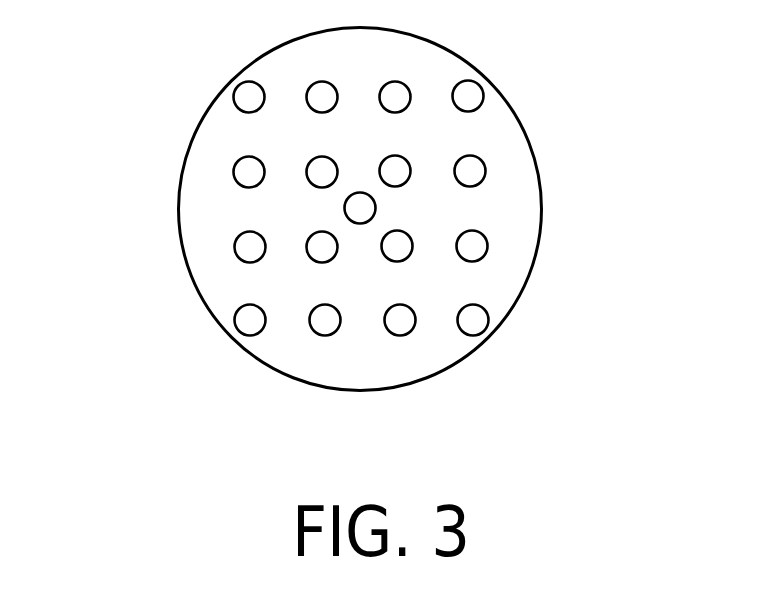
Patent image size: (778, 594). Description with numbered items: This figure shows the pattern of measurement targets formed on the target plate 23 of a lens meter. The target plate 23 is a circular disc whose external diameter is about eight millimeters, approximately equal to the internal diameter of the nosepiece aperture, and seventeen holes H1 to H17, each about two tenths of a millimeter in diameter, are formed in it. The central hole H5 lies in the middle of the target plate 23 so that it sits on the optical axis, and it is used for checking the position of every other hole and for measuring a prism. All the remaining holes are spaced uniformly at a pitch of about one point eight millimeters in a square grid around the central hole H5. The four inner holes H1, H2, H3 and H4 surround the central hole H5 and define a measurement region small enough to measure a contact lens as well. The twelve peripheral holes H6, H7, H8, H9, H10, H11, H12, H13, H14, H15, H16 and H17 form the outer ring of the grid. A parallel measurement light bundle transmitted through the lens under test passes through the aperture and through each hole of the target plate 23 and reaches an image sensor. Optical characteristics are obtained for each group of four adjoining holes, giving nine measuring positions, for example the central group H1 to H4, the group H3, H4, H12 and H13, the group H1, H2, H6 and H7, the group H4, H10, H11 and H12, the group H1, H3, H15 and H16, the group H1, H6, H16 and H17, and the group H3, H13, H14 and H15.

The target plate 23 is at (178, 174).
The hole H1 is at (322, 172).
The hole H2 is at (395, 171).
The hole H3 is at (322, 247).
The hole H4 is at (397, 246).
The central hole H5 is at (360, 208).
The hole H6 is at (322, 97).
The hole H7 is at (395, 97).
The hole H8 is at (468, 96).
The hole H9 is at (470, 171).
The hole H10 is at (472, 246).
The hole H11 is at (473, 320).
The hole H12 is at (400, 320).
The hole H13 is at (325, 320).
The hole H14 is at (250, 320).
The hole H15 is at (250, 247).
The hole H16 is at (249, 172).
The hole H17 is at (249, 97).